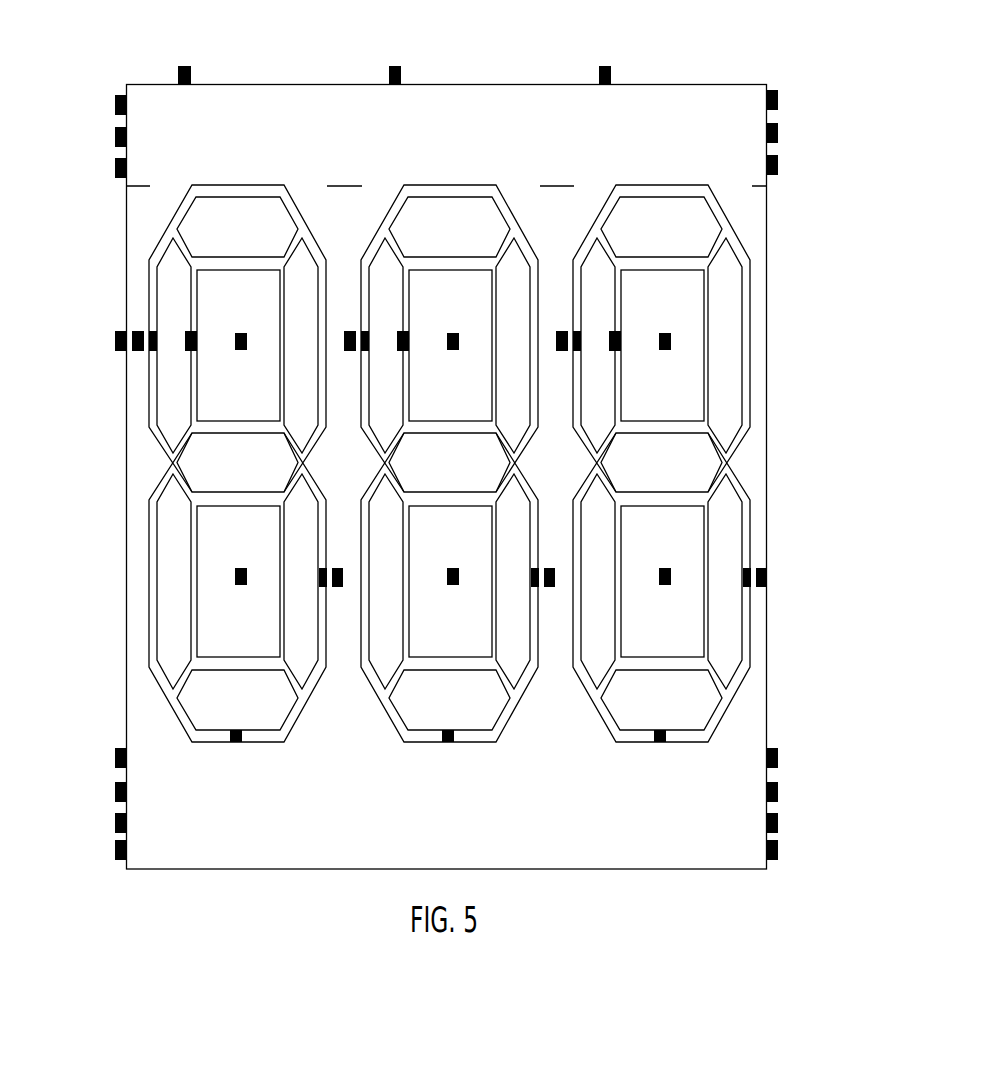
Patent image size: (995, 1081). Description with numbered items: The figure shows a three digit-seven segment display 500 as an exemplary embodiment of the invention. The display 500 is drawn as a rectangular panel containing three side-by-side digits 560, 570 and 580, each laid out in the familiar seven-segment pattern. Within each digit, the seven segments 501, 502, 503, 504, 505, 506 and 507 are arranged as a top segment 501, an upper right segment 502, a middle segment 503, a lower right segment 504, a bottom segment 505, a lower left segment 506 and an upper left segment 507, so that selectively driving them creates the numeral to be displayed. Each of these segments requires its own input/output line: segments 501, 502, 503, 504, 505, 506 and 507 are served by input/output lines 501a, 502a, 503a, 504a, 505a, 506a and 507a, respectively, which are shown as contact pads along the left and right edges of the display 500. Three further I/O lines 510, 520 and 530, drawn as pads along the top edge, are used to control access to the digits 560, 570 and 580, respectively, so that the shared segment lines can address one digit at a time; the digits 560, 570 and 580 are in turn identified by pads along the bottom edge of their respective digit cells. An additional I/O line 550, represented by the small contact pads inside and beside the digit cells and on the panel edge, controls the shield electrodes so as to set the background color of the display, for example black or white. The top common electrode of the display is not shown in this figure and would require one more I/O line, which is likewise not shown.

The three digit-seven segment display 500 is at (567, 792).
The segment 501 is at (250, 244).
The segment 502 is at (314, 356).
The segment 503 is at (252, 476).
The segment 504 is at (314, 592).
The segment 505 is at (252, 715).
The segment 506 is at (184, 592).
The segment 507 is at (184, 356).
The input/output line 501a is at (115, 135).
The input/output line 502a is at (115, 104).
The input/output line 503a is at (115, 851).
The input/output line 504a is at (115, 758).
The input/output line 505a is at (115, 822).
The input/output line 506a is at (115, 791).
The input/output line 507a is at (115, 170).
The I/O line 510 is at (184, 66).
The I/O line 520 is at (395, 66).
The I/O line 530 is at (605, 66).
The I/O line 550 is at (115, 343).
The digit 560 is at (218, 743).
The digit 570 is at (465, 743).
The digit 580 is at (675, 743).